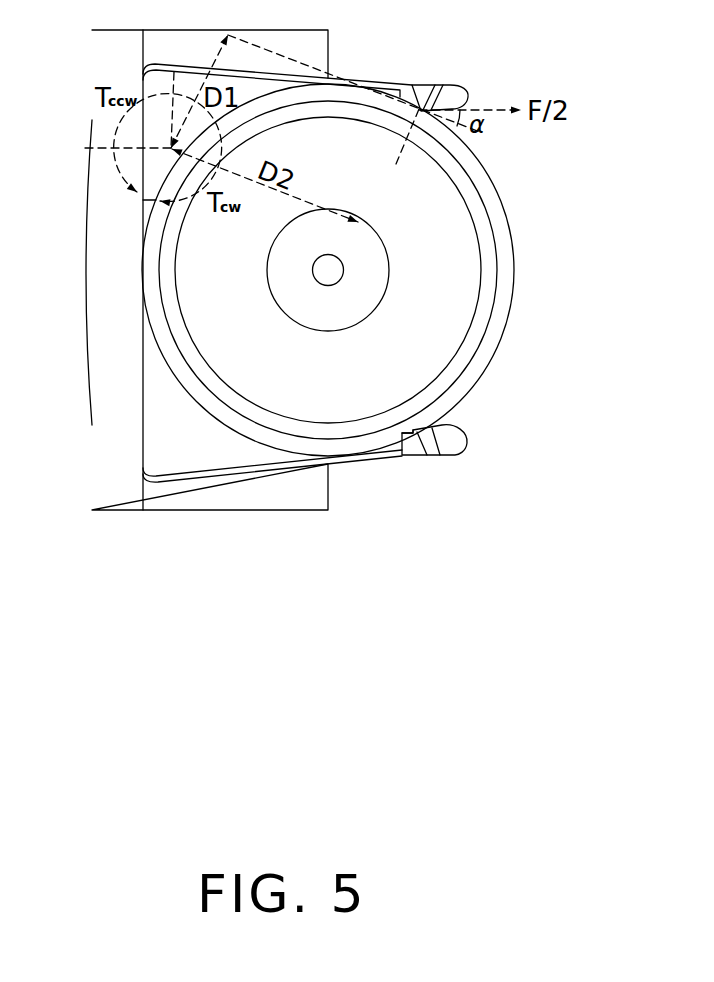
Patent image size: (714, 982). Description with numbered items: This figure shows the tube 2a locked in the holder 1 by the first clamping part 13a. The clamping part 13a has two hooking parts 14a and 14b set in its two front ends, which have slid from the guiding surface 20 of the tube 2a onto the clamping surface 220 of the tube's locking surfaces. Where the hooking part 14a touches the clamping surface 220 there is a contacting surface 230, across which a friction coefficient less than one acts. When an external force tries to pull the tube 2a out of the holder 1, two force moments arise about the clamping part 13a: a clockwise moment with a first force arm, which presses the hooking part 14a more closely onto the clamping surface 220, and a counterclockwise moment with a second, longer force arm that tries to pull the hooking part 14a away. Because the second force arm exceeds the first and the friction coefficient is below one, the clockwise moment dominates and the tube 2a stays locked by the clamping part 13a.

The holder 1 is at (102, 233).
The guiding surface 20 is at (221, 423).
The tube 2a is at (465, 297).
The clamping part 13a is at (347, 77).
The hooking part 14a is at (447, 98).
The hooking part 14b is at (453, 443).
The contacting surface 230 is at (419, 109).
The clamping surface 220 is at (411, 436).